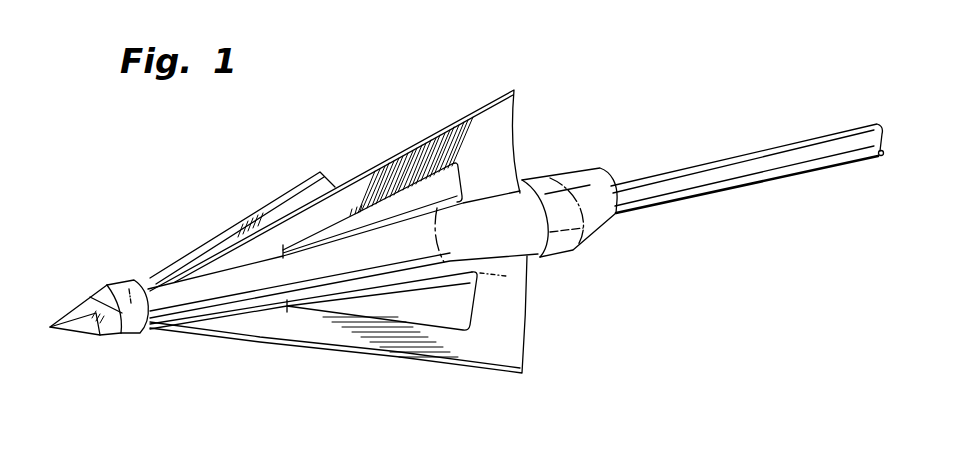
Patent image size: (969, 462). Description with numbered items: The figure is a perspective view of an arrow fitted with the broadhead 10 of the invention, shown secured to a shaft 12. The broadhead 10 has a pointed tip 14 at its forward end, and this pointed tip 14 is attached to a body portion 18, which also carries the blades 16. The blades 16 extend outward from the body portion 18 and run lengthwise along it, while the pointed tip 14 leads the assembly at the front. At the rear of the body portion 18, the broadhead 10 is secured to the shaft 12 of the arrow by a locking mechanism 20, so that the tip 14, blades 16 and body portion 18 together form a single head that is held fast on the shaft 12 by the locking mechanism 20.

The broadhead 10 is at (547, 124).
The shaft 12 is at (767, 163).
The pointed tip 14 is at (128, 300).
The blades 16 is at (470, 140).
The body portion 18 is at (235, 287).
The locking mechanism 20 is at (600, 203).